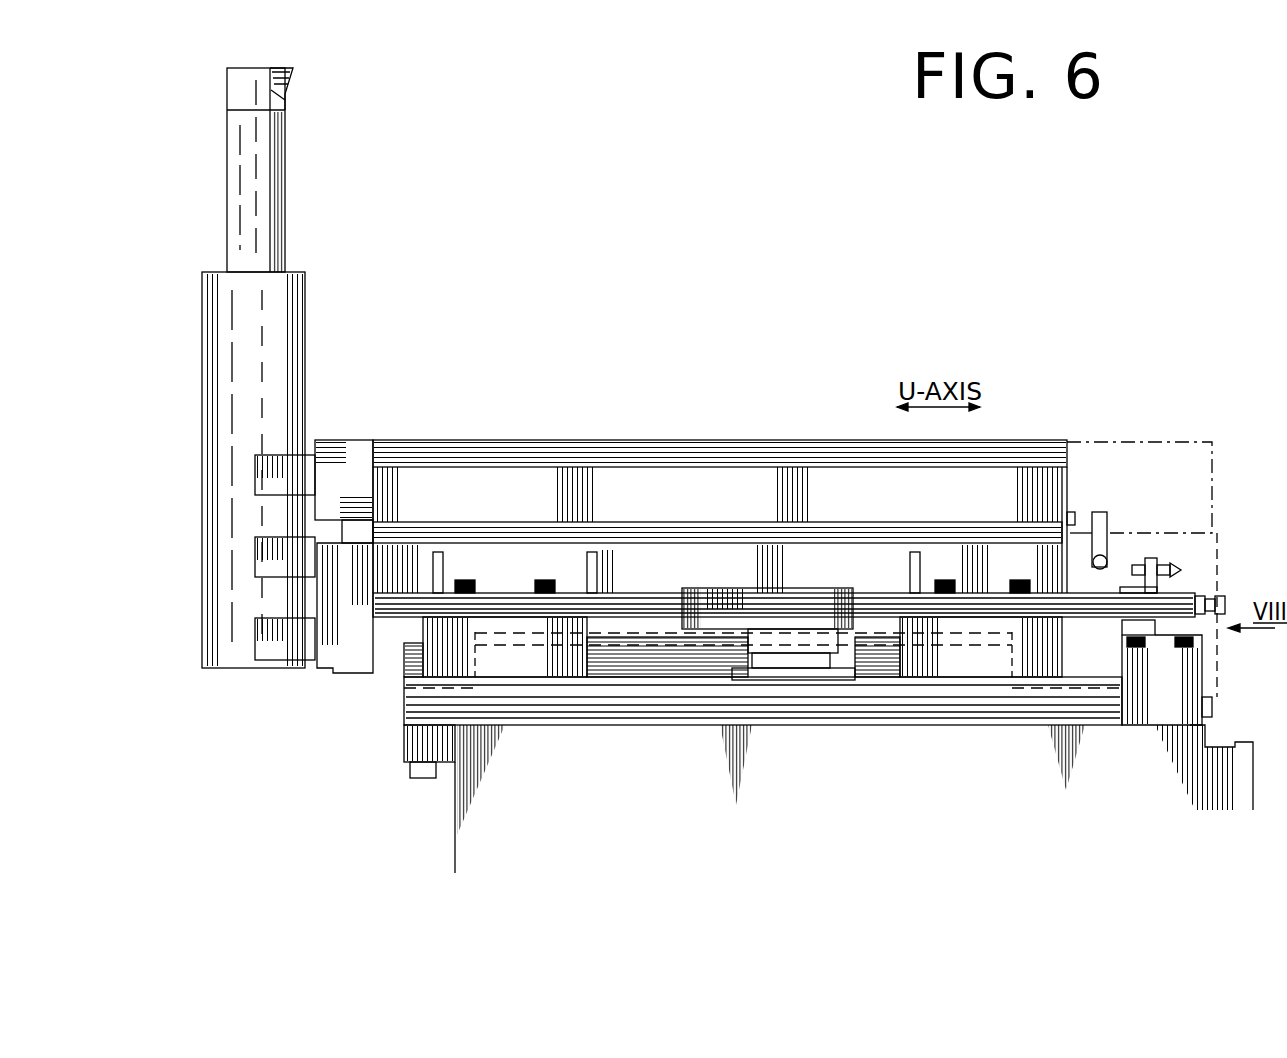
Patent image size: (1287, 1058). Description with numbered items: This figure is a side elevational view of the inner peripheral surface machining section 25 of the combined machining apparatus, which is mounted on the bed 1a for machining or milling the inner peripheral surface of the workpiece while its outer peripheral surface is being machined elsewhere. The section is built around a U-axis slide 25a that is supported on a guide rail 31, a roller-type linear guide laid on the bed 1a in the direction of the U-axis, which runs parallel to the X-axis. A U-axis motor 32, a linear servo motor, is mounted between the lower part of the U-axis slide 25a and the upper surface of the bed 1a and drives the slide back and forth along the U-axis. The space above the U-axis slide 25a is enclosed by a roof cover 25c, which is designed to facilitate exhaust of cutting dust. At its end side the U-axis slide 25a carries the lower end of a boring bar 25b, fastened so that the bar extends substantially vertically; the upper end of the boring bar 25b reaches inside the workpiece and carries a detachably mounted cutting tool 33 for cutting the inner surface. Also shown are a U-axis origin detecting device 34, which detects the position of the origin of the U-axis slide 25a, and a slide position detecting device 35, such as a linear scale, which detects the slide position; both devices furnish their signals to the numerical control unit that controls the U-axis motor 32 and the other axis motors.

The bed 1a is at (1170, 745).
The inner peripheral surface machining section 25 is at (726, 437).
The U-axis slide 25a is at (598, 475).
The boring bar 25b is at (285, 298).
The roof cover 25c is at (1115, 438).
The guide rail 31 is at (640, 660).
The U-axis motor 32 is at (880, 668).
The cutting tool 33 is at (274, 96).
The U-axis origin detecting device 34 is at (1168, 562).
The slide position detecting device 35 is at (697, 588).